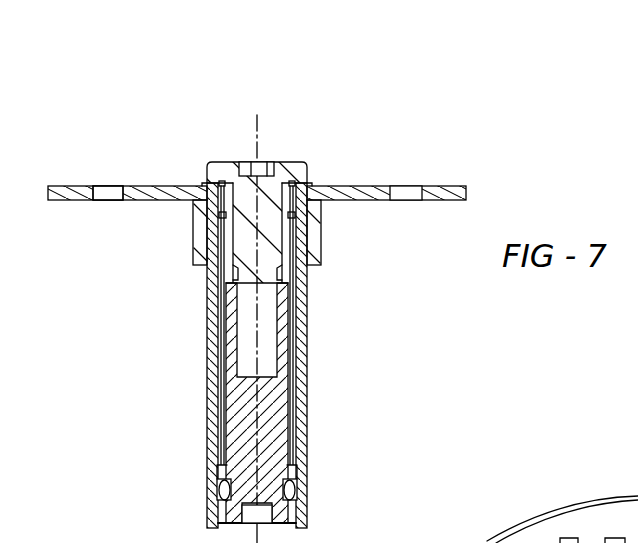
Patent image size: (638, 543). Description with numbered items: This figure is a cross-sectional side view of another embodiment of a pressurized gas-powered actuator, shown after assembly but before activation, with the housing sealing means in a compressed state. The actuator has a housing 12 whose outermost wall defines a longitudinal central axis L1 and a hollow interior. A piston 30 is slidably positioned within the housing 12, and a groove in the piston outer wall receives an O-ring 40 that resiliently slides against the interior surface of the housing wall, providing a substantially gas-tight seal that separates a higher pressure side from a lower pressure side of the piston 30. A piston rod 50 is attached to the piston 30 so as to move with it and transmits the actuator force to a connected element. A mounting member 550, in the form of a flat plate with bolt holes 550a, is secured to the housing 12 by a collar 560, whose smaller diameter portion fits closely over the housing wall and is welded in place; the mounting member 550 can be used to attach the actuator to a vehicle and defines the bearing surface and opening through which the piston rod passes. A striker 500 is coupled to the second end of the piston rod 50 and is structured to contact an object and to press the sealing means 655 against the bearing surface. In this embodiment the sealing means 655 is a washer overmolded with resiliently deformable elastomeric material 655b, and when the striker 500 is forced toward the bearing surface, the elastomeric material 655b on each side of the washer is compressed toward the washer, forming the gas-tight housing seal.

The longitudinal central axis L1 is at (255, 133).
The mounting member 550 is at (148, 196).
The bolt holes 550a is at (106, 190).
The collar 560 is at (195, 259).
The housing 12 is at (303, 362).
The striker 500 is at (283, 174).
The sealing means 655 is at (313, 184).
The piston rod 50 is at (237, 322).
The O-ring 40 is at (296, 490).
The piston 30 is at (226, 512).
The overmolded elastomeric material 655b is at (498, 542).